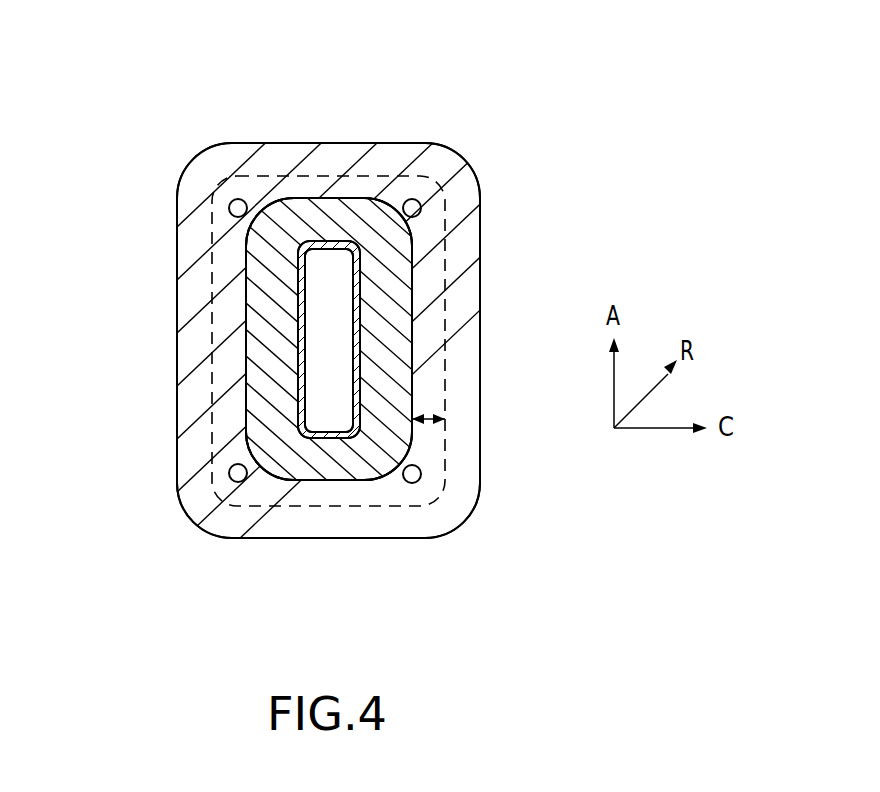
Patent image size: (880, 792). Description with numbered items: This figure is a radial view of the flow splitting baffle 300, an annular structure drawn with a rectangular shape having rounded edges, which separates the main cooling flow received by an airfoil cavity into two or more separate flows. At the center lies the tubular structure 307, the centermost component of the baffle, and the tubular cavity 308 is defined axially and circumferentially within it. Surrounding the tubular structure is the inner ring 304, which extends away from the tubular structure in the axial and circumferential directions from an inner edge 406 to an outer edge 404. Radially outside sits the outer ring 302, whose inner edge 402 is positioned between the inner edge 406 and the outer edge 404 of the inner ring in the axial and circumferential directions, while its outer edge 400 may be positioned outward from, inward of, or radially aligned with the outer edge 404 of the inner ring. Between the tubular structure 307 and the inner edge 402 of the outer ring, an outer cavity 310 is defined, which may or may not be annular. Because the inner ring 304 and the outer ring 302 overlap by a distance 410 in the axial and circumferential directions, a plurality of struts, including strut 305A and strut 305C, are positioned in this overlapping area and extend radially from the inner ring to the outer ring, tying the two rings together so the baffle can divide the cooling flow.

The flow splitting baffle 300 is at (135, 97).
The outer ring 302 is at (192, 198).
The inner ring 304 is at (280, 207).
The tubular structure 307 is at (307, 243).
The tubular cavity 308 is at (318, 292).
The outer cavity 310 is at (253, 368).
The outer edge of outer ring 400 is at (177, 427).
The strut 305A is at (229, 473).
The strut 305C is at (421, 476).
The inner edge of outer ring 402 is at (270, 472).
The outer edge of inner ring 404 is at (255, 503).
The inner edge of inner ring 406 is at (355, 441).
The distance 410 is at (418, 416).